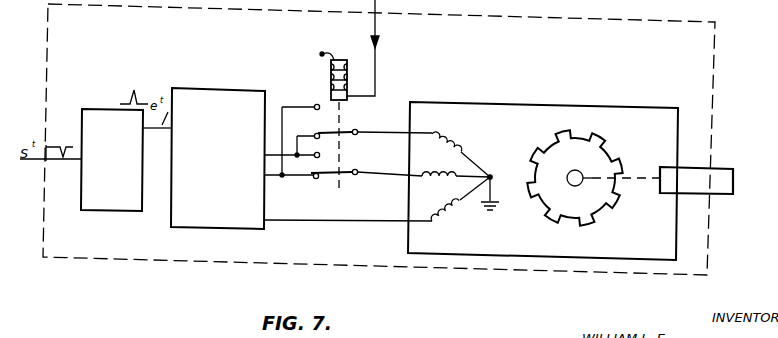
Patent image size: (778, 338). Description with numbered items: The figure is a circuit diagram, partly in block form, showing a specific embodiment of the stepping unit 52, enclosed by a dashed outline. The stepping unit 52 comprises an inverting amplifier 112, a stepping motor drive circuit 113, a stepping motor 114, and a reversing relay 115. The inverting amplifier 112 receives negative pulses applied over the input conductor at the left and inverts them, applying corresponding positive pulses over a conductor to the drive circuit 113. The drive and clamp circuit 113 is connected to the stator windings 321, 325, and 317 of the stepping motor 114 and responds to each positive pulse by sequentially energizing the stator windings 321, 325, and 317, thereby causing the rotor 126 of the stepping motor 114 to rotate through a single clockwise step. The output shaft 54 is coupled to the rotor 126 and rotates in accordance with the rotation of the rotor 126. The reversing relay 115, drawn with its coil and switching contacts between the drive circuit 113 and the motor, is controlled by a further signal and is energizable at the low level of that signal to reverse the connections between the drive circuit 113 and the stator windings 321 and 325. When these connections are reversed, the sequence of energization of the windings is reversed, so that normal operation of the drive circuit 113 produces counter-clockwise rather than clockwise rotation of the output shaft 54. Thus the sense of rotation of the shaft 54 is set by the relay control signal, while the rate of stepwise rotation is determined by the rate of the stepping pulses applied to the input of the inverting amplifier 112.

The stepping unit 52 is at (385, 250).
The output shaft 54 is at (718, 179).
The inverting amplifier 112 is at (96, 199).
The stepping motor drive circuit 113 is at (207, 213).
The stepping motor 114 is at (498, 245).
The reversing relay 115 is at (357, 49).
The rotor 126 is at (575, 153).
The stator winding 317 is at (448, 218).
The stator winding 321 is at (468, 161).
The stator winding 325 is at (457, 141).